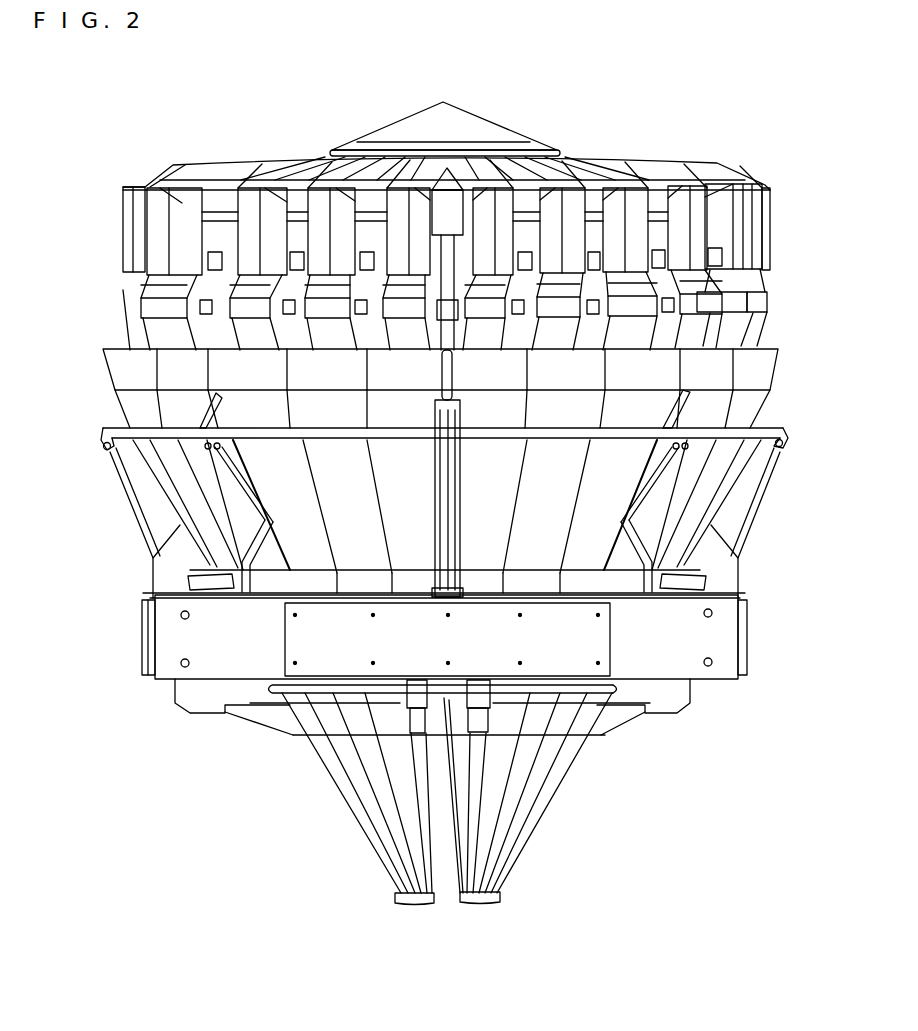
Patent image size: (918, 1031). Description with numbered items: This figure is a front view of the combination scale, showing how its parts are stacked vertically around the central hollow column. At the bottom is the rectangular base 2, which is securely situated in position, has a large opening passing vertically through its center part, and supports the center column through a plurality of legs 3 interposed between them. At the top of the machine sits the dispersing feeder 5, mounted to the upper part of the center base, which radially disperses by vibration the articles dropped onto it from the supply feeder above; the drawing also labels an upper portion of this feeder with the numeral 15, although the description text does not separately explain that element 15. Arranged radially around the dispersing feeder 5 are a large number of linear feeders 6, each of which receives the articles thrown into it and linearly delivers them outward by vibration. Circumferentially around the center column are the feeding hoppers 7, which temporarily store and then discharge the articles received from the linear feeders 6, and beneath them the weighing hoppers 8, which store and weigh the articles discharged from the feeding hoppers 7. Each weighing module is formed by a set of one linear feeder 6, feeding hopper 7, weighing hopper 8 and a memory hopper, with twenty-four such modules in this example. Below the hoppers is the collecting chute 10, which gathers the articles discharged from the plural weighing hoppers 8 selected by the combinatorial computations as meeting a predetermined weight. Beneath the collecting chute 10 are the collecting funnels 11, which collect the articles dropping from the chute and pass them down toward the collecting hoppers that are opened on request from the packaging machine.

The base 2 is at (167, 645).
The legs 3 is at (154, 578).
The dispersing feeder 5 is at (492, 112).
The linear feeders 6 is at (242, 165).
The feeding hoppers 7 is at (187, 233).
The weighing hoppers 8 is at (193, 338).
The collecting chute 10 is at (182, 480).
The collecting funnels 11 is at (377, 855).
The conical top of dispersion feeder 15 is at (398, 131).